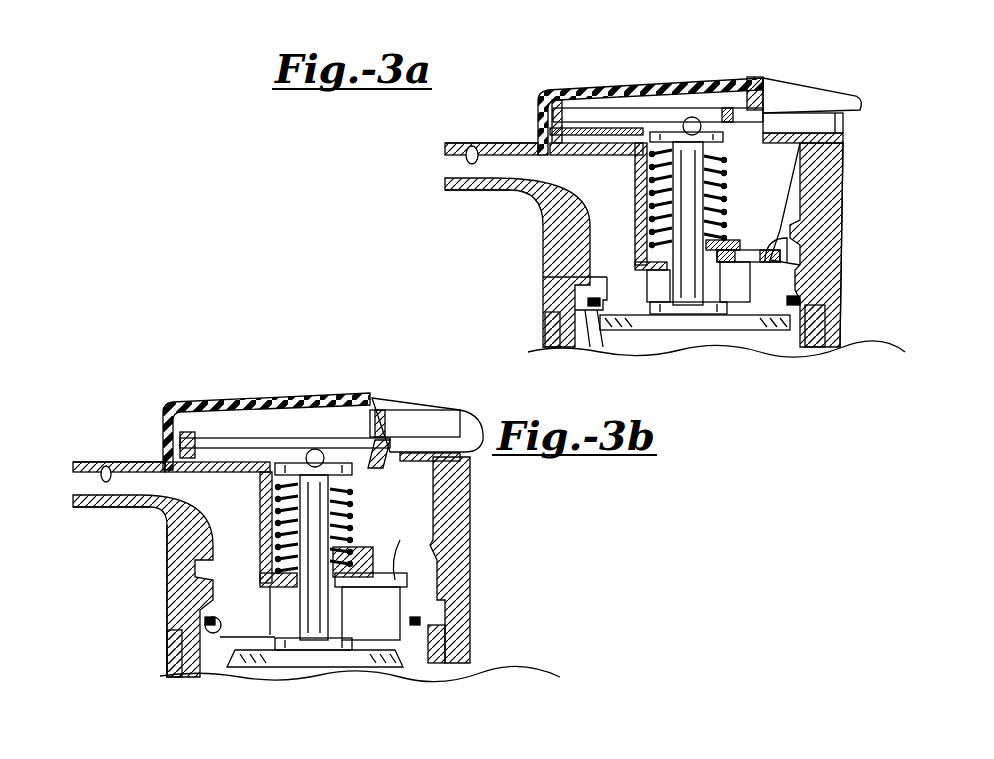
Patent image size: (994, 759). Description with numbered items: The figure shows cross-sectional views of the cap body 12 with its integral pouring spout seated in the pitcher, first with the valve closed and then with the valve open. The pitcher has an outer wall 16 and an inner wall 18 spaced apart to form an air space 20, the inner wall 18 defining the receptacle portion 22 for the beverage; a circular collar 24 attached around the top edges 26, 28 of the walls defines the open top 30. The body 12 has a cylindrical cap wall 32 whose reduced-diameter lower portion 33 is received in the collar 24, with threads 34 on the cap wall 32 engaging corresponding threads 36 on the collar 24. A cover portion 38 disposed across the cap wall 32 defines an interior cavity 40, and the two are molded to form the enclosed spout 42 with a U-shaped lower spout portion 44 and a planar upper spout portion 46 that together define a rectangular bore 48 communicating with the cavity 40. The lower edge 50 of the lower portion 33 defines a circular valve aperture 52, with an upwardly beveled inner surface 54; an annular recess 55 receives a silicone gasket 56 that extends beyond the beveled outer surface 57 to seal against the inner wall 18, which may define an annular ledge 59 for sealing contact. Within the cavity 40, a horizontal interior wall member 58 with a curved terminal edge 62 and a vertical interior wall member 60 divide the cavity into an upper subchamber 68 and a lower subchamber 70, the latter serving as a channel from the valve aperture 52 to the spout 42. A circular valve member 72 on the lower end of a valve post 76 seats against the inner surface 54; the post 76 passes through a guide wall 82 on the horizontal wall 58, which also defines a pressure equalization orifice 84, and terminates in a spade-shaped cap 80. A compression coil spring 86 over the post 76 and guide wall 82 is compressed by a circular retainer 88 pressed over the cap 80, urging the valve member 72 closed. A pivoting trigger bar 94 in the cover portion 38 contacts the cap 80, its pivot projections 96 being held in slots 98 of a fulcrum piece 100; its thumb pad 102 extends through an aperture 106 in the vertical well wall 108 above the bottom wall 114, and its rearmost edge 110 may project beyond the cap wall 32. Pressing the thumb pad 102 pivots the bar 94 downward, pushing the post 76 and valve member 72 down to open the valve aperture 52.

In FIG. 3a, the body 12 is at (604, 76).
In FIG. 3a, the outer wall 16 is at (545, 348).
In FIG. 3b, the outer wall 16 is at (167, 655).
In FIG. 3a, the inner wall 18 is at (693, 354).
In FIG. 3b, the inner wall 18 is at (470, 668).
In FIG. 3a, the air space 20 is at (548, 345).
In FIG. 3b, the air space 20 is at (480, 665).
In FIG. 3a, the receptacle portion 22 is at (792, 332).
In FIG. 3a, the circular collar 24 is at (575, 250).
In FIG. 3b, the circular collar 24 is at (167, 560).
In FIG. 3a, the top edge 26 is at (548, 322).
In FIG. 3b, the top edge 26 is at (168, 637).
In FIG. 3a, the top edge 28 is at (555, 300).
In FIG. 3b, the top edge 28 is at (168, 610).
In FIG. 3a, the open top 30 is at (842, 212).
In FIG. 3b, the open top 30 is at (168, 530).
In FIG. 3a, the cap wall 32 is at (841, 180).
In FIG. 3b, the cap wall 32 is at (143, 507).
In FIG. 3a, the lower portion 33 is at (563, 290).
In FIG. 3b, the lower portion 33 is at (304, 571).
In FIG. 3a, the threads 34 is at (560, 275).
In FIG. 3b, the threads 34 is at (167, 590).
In FIG. 3b, the threads 36 is at (213, 560).
In FIG. 3a, the cover portion 38 is at (538, 117).
In FIG. 3b, the cover portion 38 is at (165, 422).
In FIG. 3a, the interior cavity 40 is at (607, 82).
In FIG. 3b, the interior cavity 40 is at (319, 428).
In FIG. 3a, the enclosed spout 42 is at (444, 197).
In FIG. 3b, the enclosed spout 42 is at (80, 505).
In FIG. 3a, the lower spout portion 44 is at (462, 192).
In FIG. 3b, the lower spout portion 44 is at (100, 508).
In FIG. 3a, the upper spout portion 46 is at (468, 143).
In FIG. 3b, the upper spout portion 46 is at (95, 463).
In FIG. 3a, the rectangular bore 48 is at (472, 160).
In FIG. 3b, the rectangular bore 48 is at (107, 475).
In FIG. 3a, the lower edge 50 is at (603, 318).
In FIG. 3b, the lower edge 50 is at (222, 630).
In FIG. 3a, the valve aperture 52 is at (775, 325).
In FIG. 3b, the valve aperture 52 is at (378, 578).
In FIG. 3a, the inner surface 54 is at (615, 308).
In FIG. 3b, the inner surface 54 is at (258, 638).
In FIG. 3a, the annular recess 55 is at (810, 325).
In FIG. 3a, the silicone gasket 56 is at (590, 312).
In FIG. 3b, the silicone gasket 56 is at (167, 665).
In FIG. 3a, the beveled outer surface 57 is at (578, 332).
In FIG. 3b, the beveled outer surface 57 is at (417, 640).
In FIG. 3a, the horizontal interior wall member 58 is at (735, 402).
In FIG. 3b, the annular ledge 59 is at (425, 640).
In FIG. 3a, the vertical interior wall member 60 is at (640, 180).
In FIG. 3a, the curved terminal edge 62 is at (637, 235).
In FIG. 3a, the upper subchamber 68 is at (759, 182).
In FIG. 3a, the lower subchamber 70 is at (604, 272).
In FIG. 3a, the valve member 72 is at (665, 325).
In FIG. 3a, the valve post 76 is at (637, 195).
In FIG. 3a, the cap 80 is at (700, 110).
In FIG. 3a, the guide wall 82 is at (722, 252).
In FIG. 3a, the pressure equalization orifice 84 is at (752, 318).
In FIG. 3a, the compression coil spring 86 is at (712, 185).
In FIG. 3b, the compression coil spring 86 is at (345, 500).
In FIG. 3a, the circular retainer 88 is at (660, 128).
In FIG. 3a, the trigger bar 94 is at (617, 100).
In FIG. 3b, the trigger bar 94 is at (248, 440).
In FIG. 3a, the pivot projections 96 is at (540, 82).
In FIG. 3a, the slots 98 is at (563, 107).
In FIG. 3a, the fulcrum piece 100 is at (562, 100).
In FIG. 3a, the thumb pad 102 is at (810, 88).
In FIG. 3b, the thumb pad 102 is at (415, 405).
In FIG. 3a, the aperture 106 is at (760, 100).
In FIG. 3a, the vertical well wall 108 is at (793, 120).
In FIG. 3a, the rearmost edge 110 is at (860, 108).
In FIG. 3a, the bottom wall 114 is at (727, 110).